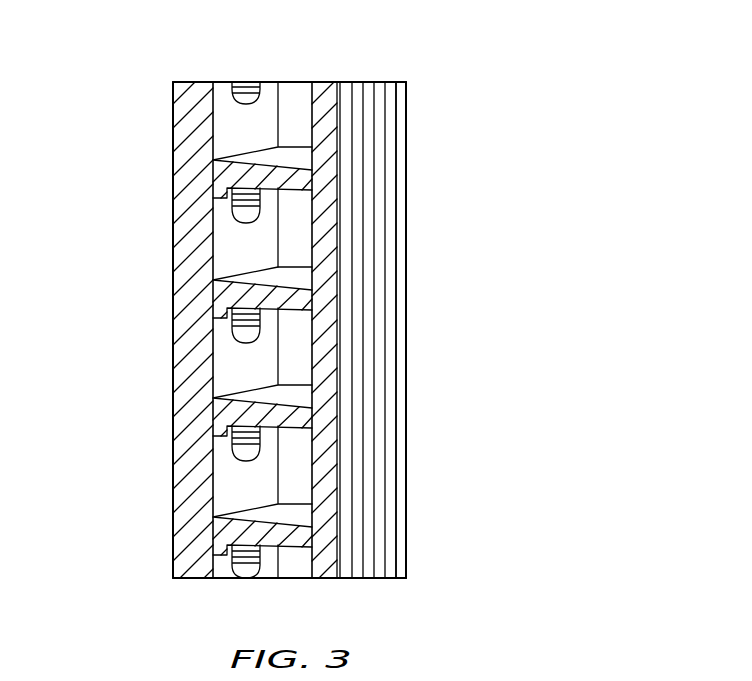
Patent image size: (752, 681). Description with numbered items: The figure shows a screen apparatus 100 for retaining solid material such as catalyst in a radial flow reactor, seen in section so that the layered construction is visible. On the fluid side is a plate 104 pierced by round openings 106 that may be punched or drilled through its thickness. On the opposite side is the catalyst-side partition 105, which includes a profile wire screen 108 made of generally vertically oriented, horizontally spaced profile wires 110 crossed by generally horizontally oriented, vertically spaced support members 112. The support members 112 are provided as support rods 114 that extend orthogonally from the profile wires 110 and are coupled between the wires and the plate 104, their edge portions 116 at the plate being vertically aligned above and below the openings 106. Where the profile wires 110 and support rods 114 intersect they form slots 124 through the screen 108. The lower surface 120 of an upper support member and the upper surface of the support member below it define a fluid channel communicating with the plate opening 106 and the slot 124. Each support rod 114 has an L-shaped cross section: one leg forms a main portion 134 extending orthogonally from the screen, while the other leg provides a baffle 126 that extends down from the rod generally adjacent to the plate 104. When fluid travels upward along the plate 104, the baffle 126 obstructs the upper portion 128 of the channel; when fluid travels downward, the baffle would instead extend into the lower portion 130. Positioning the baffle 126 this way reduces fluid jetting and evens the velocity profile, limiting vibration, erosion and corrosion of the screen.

The apparatus 100 is at (210, 47).
The plate 104 is at (182, 276).
The catalyst-side partition 105 is at (477, 77).
The openings 106 is at (233, 333).
The profile wire screen 108 is at (365, 381).
The profile wires 110 is at (388, 503).
The support members 112 is at (287, 157).
The support rods 114 is at (300, 297).
The edge portions 116 is at (227, 142).
The lower surface 120 is at (138, 176).
The slots 124 is at (402, 181).
The baffle 126 is at (227, 308).
The upper portion 128 is at (300, 203).
The lower portion 130 is at (278, 262).
The main portion 134 is at (300, 423).